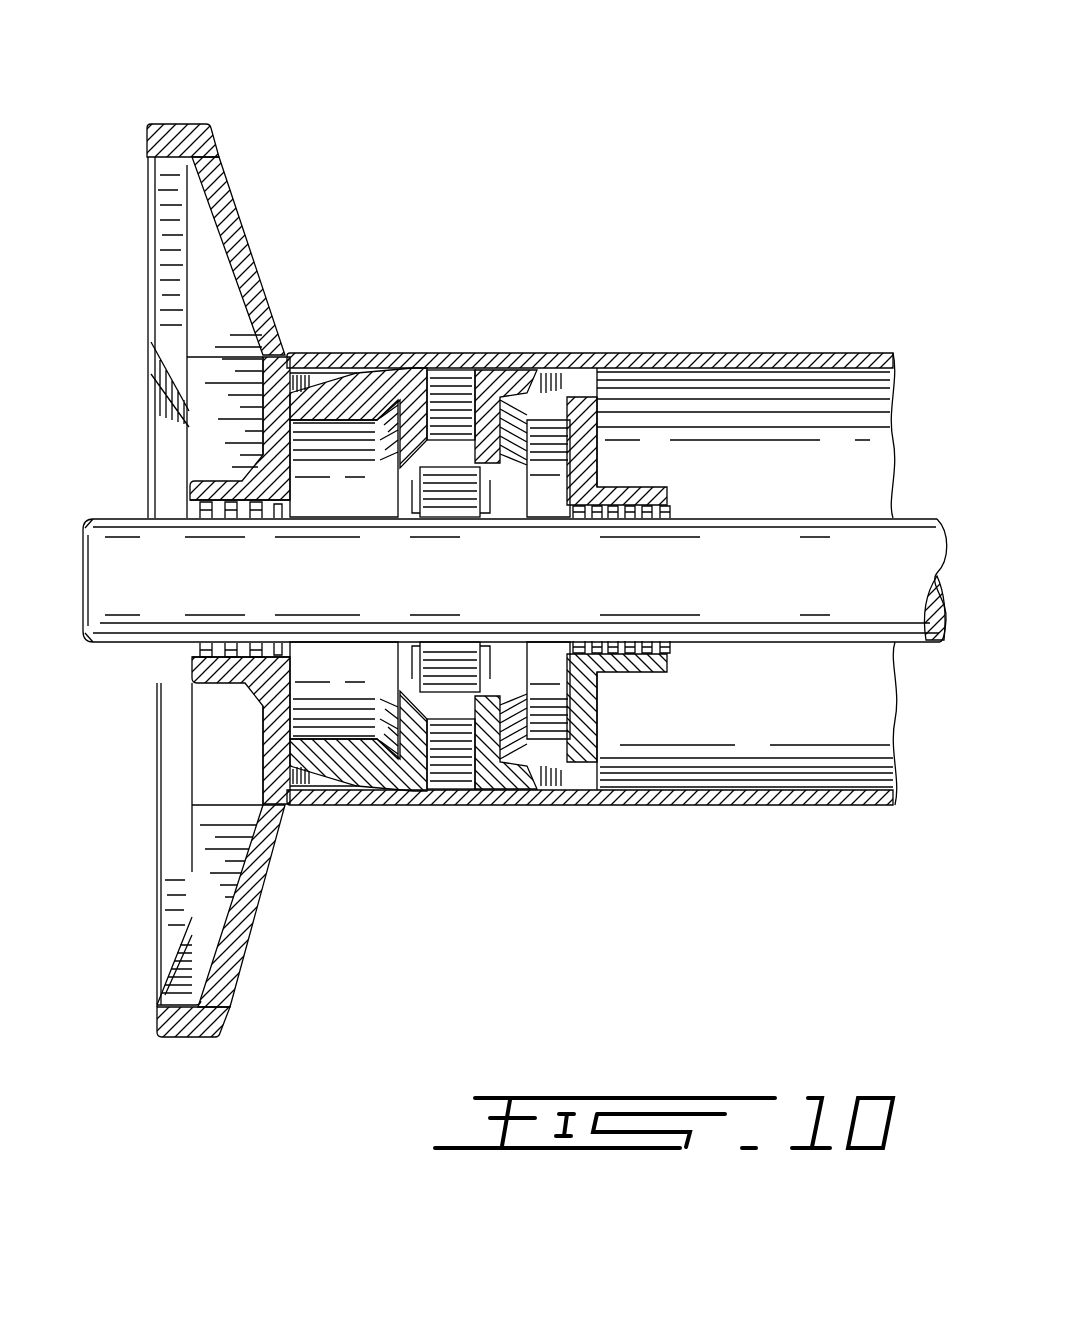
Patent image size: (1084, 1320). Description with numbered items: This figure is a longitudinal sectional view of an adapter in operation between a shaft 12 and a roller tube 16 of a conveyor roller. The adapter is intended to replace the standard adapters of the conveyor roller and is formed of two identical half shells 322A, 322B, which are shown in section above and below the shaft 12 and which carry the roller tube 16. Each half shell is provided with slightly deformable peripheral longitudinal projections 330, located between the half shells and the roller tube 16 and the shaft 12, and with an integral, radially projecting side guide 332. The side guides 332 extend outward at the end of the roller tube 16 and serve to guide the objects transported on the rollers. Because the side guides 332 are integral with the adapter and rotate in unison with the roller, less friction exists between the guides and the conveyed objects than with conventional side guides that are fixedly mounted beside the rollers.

The shaft 12 is at (825, 600).
The roller tube 16 is at (775, 352).
The half shell 322A is at (203, 127).
The half shell 322B is at (200, 1038).
The peripheral longitudinal projections 330 is at (548, 380).
The side guide 332 is at (240, 252).